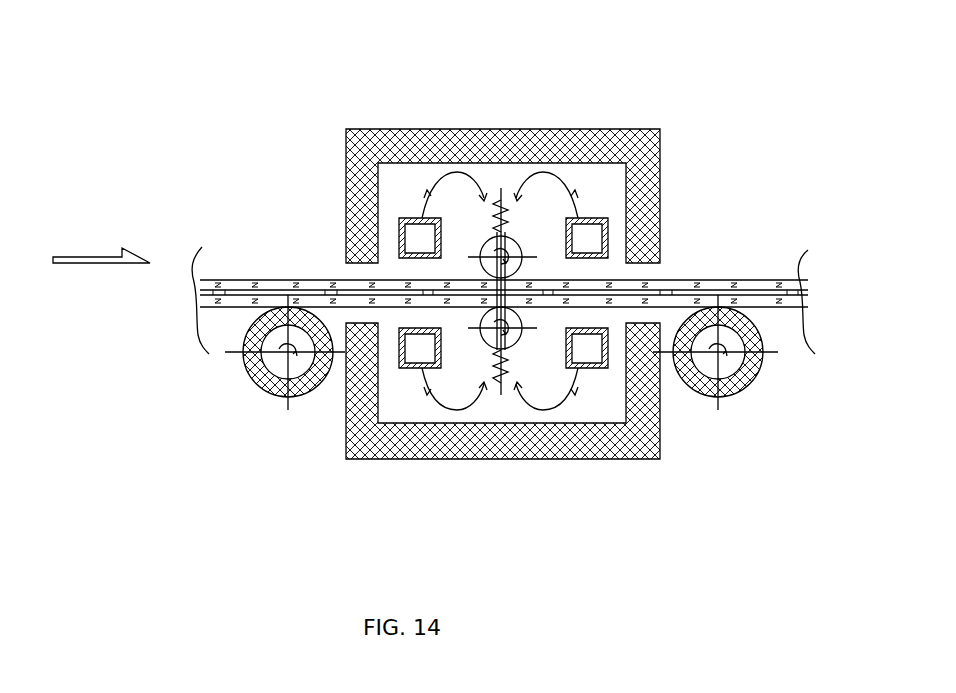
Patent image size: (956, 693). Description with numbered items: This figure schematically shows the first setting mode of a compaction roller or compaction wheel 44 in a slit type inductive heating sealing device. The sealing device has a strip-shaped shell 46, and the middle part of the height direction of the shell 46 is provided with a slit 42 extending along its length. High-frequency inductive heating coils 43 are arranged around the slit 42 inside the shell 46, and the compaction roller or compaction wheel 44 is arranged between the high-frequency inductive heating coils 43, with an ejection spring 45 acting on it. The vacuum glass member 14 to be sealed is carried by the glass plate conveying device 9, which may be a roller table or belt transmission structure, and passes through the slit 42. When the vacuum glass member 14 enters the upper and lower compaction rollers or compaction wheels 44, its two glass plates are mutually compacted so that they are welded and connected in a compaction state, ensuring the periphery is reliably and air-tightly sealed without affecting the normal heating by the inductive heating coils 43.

The glass plate conveying device 9 is at (267, 395).
The vacuum glass member 14 is at (231, 285).
The slit 42 is at (657, 270).
The inductive heating coils 43 is at (607, 220).
The compaction roller or compaction wheel 44 is at (515, 340).
The ejection spring 45 is at (506, 215).
The shell 46 is at (405, 440).